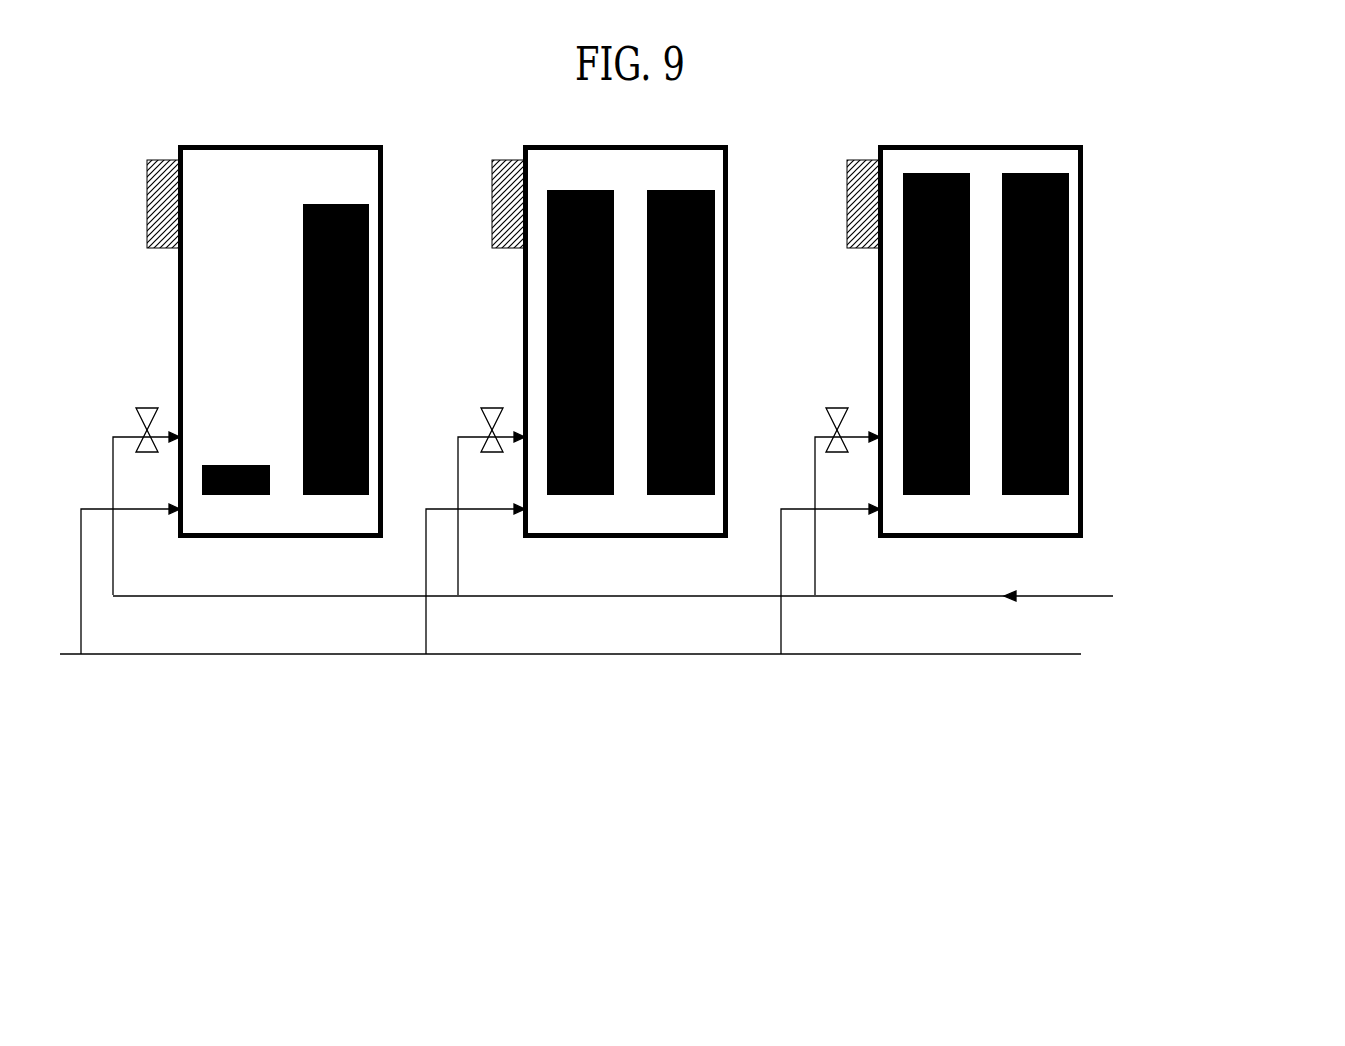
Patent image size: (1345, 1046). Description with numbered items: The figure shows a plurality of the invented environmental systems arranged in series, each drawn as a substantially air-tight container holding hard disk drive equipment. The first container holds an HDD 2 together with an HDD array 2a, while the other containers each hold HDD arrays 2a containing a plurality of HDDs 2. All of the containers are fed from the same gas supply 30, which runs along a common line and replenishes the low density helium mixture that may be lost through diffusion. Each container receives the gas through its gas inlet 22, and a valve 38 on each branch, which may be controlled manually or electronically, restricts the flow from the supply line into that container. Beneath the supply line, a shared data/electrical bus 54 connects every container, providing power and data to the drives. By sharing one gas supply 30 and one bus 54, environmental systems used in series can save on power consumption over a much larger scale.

The HDD 2 is at (212, 495).
The HDD array 2a is at (327, 495).
The gas inlet 22 is at (877, 427).
The gas supply 30 is at (1081, 596).
The valve 38 is at (837, 410).
The data/electrical bus 54 is at (758, 654).